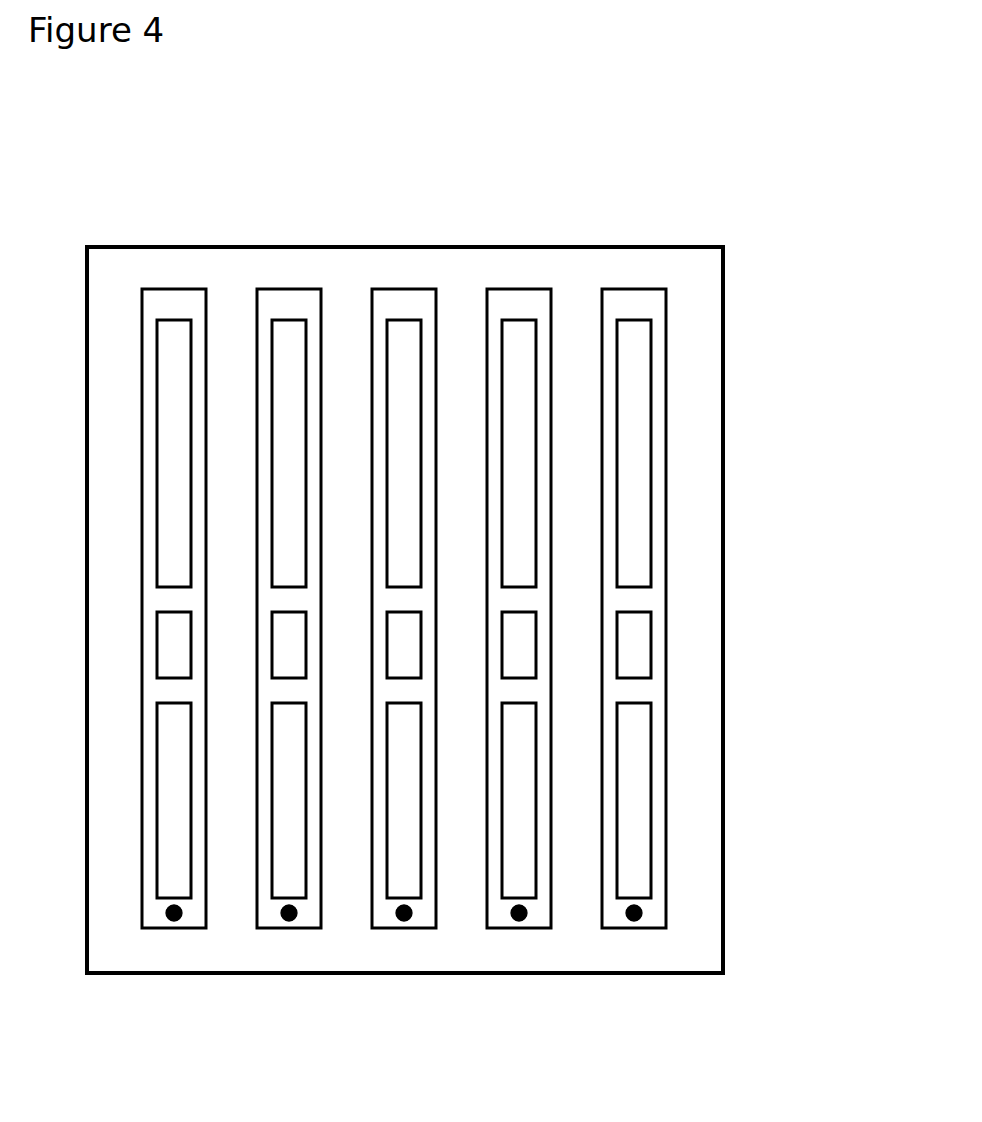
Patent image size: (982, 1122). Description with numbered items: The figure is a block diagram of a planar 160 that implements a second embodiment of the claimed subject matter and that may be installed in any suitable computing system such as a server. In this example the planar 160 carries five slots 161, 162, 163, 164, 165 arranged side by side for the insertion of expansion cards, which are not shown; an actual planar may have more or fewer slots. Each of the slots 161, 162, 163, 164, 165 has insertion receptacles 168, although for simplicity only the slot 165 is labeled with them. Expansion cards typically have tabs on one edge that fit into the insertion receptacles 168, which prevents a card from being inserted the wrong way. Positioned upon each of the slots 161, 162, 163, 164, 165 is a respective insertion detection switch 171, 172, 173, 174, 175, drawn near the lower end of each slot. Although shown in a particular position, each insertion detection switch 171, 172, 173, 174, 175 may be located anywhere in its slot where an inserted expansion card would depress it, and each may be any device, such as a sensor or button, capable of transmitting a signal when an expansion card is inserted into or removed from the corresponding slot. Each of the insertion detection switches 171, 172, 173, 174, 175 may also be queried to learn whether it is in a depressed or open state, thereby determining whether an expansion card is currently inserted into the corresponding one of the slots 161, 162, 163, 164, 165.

The planar 160 is at (386, 138).
The slot 161 is at (174, 289).
The slot 162 is at (289, 289).
The slot 163 is at (404, 289).
The slot 164 is at (519, 289).
The slot 165 is at (634, 289).
The insertion receptacles 168 is at (652, 500).
The insertion detection switch 171 is at (174, 921).
The insertion detection switch 172 is at (289, 921).
The insertion detection switch 173 is at (404, 921).
The insertion detection switch 174 is at (519, 921).
The insertion detection switch 175 is at (634, 921).